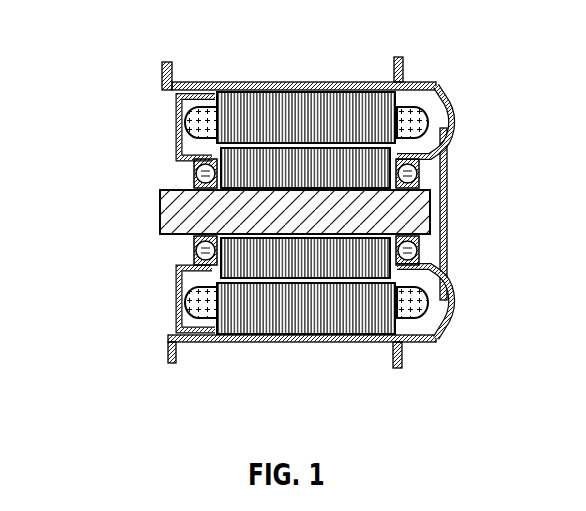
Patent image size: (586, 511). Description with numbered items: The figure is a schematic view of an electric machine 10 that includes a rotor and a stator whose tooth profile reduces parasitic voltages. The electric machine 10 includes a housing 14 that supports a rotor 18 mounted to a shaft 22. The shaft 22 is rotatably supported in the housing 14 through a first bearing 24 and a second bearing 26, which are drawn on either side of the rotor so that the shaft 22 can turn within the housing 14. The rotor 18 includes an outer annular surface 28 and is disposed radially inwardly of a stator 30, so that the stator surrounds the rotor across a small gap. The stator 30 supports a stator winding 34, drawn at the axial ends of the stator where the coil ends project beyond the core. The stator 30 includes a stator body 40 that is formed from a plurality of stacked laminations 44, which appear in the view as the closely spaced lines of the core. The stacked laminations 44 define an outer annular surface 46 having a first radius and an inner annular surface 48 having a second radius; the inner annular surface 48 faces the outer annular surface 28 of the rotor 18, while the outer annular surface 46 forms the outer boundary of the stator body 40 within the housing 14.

The electric machine 10 is at (97, 56).
The housing 14 is at (358, 342).
The rotor 18 is at (335, 255).
The shaft 22 is at (413, 213).
The first bearing 24 is at (193, 248).
The second bearing 26 is at (413, 242).
The outer annular surface 28 is at (328, 147).
The stator 30 is at (459, 283).
The stator winding 34 is at (426, 121).
The stator body 40 is at (214, 100).
The stacked laminations 44 is at (290, 117).
The outer annular surface 46 is at (378, 333).
The inner annular surface 48 is at (248, 147).